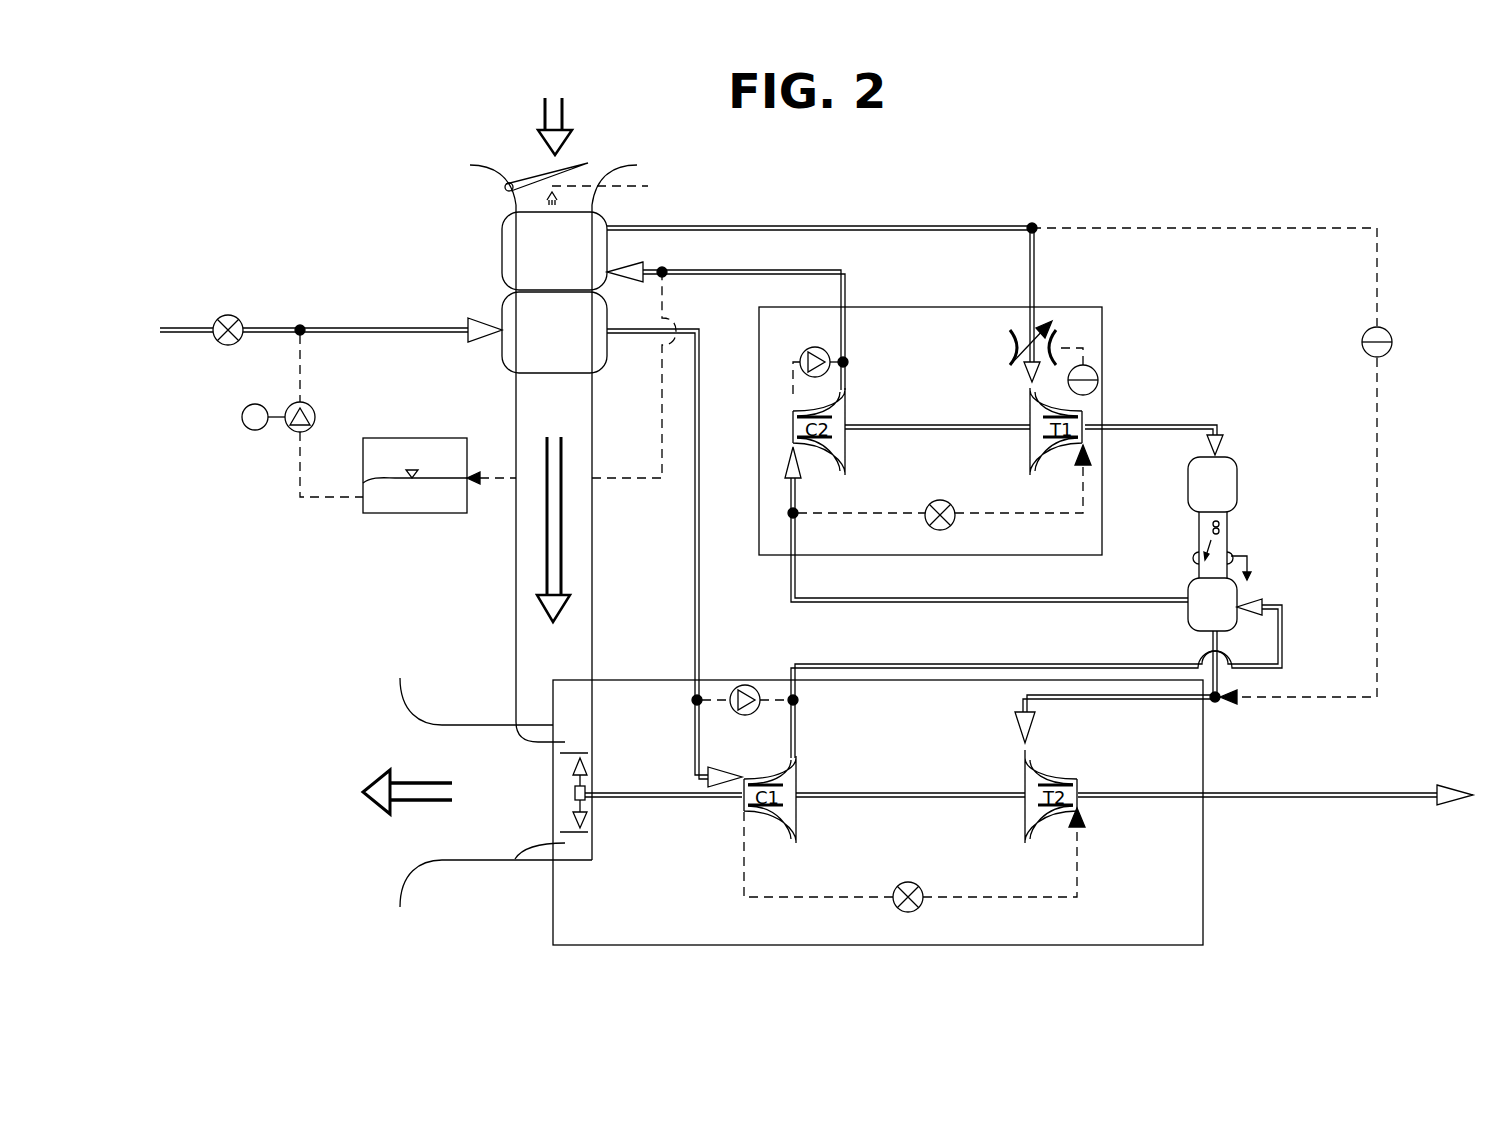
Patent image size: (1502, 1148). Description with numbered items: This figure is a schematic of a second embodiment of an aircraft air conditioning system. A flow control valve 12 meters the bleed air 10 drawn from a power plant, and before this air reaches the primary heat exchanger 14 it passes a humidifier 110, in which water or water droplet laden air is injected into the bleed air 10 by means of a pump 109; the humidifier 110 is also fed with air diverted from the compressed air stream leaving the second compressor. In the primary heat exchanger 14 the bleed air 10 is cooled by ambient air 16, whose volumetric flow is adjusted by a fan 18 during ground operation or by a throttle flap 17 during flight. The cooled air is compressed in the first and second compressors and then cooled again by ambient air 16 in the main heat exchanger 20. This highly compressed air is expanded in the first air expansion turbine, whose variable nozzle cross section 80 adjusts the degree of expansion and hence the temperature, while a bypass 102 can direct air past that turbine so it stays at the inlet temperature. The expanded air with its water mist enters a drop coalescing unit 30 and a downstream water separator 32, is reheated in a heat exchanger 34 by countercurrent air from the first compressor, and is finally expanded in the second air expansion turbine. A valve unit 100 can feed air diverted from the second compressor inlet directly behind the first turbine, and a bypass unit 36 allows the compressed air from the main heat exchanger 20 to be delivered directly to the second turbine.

The bleed air 10 is at (326, 319).
The flow control valve 12 is at (227, 300).
The primary heat exchanger 14 is at (527, 339).
The ambient air 16 is at (588, 126).
The throttle flap 17 is at (541, 157).
The fan 18 is at (545, 792).
The main heat exchanger 20 is at (525, 251).
The drop coalescing unit 30 is at (1243, 484).
The water separator 32 is at (1245, 546).
The heat exchanger 34 is at (1252, 602).
The bypass unit 36 is at (1251, 466).
The variable nozzle cross section 80 is at (1053, 312).
The valve unit 100 is at (944, 487).
The bypass 102 is at (1125, 378).
The pump 109 is at (255, 439).
The humidifier 110 is at (415, 518).